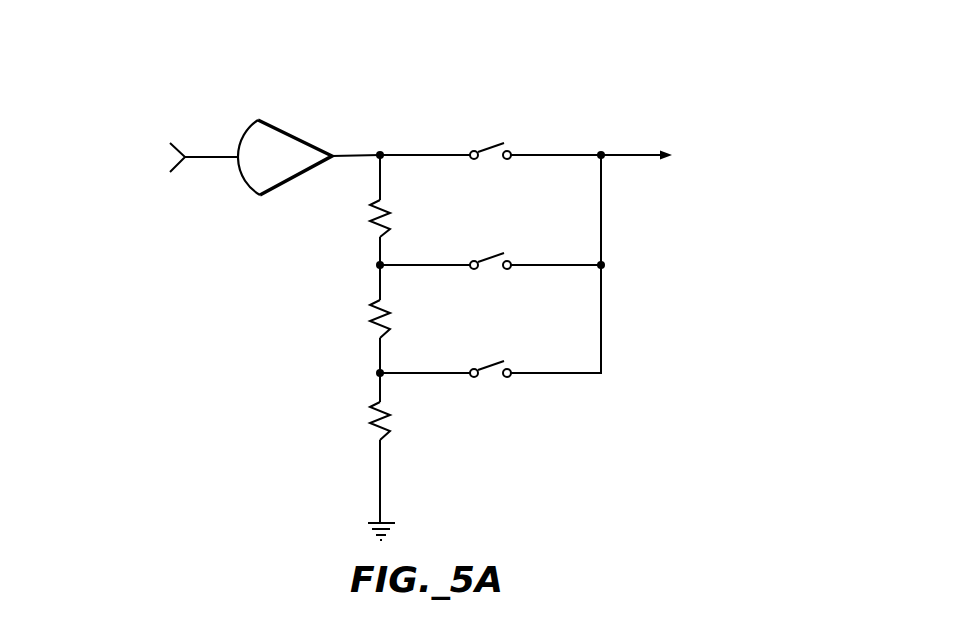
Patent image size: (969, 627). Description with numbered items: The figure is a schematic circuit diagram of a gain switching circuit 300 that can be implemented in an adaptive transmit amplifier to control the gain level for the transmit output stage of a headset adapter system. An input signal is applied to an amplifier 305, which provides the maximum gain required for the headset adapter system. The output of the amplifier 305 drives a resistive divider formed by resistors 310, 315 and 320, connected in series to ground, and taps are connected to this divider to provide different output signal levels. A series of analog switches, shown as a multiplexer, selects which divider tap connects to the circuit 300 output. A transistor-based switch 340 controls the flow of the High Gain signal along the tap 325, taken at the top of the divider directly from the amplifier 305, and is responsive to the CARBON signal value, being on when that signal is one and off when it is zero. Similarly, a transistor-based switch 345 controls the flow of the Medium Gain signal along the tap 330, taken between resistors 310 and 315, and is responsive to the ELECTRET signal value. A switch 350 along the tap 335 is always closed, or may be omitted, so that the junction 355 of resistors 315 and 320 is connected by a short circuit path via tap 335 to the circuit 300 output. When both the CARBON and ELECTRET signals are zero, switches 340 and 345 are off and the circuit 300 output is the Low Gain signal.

The gain switching circuit 300 is at (676, 96).
The amplifier 305 is at (243, 179).
The resistor 310 is at (382, 200).
The resistor 315 is at (378, 338).
The resistor 320 is at (378, 440).
The tap 325 is at (422, 155).
The tap 330 is at (413, 265).
The tap 335 is at (417, 373).
The transistor-based switch 340 is at (491, 148).
The transistor-based switch 345 is at (491, 258).
The switch 350 is at (491, 366).
The junction 355 is at (378, 373).